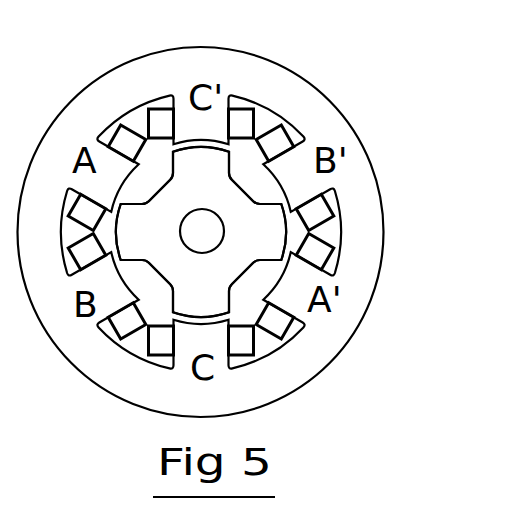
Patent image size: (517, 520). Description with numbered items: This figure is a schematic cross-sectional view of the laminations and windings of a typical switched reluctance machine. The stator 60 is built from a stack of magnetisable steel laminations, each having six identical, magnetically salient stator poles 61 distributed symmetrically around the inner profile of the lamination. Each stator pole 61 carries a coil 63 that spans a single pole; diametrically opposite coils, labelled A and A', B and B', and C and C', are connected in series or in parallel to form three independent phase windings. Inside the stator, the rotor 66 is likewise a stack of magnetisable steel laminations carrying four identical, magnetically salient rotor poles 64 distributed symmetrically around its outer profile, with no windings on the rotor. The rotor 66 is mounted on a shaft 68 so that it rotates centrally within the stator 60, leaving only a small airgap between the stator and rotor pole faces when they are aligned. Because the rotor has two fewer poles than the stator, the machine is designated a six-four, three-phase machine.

The stator 60 is at (351, 122).
The stator pole 61 is at (216, 120).
The coil 63 is at (293, 143).
The rotor pole 64 is at (179, 306).
The rotor 66 is at (177, 246).
The shaft 68 is at (206, 226).